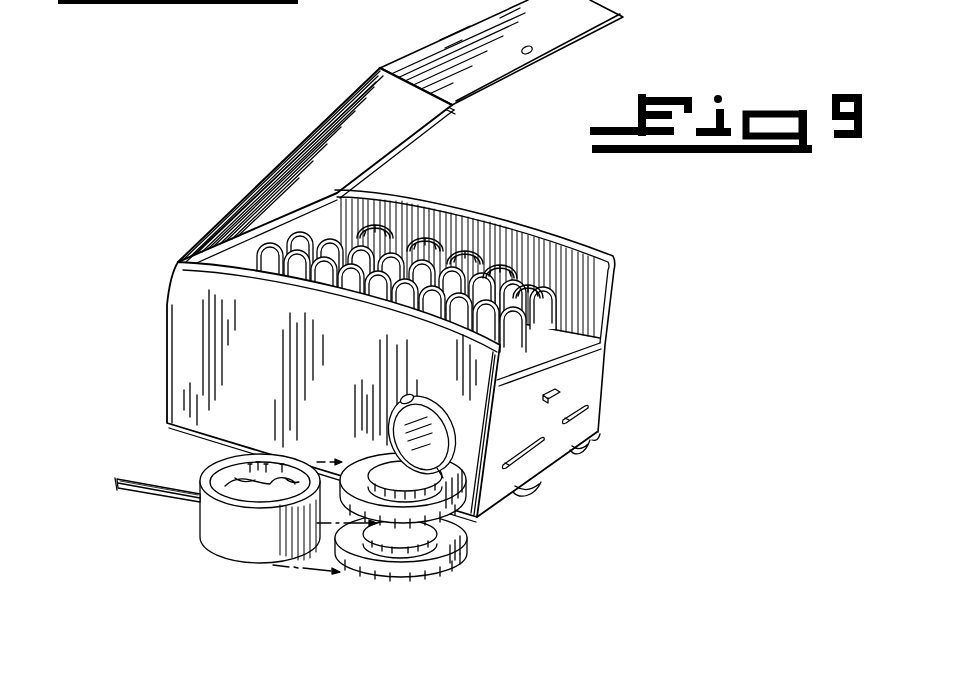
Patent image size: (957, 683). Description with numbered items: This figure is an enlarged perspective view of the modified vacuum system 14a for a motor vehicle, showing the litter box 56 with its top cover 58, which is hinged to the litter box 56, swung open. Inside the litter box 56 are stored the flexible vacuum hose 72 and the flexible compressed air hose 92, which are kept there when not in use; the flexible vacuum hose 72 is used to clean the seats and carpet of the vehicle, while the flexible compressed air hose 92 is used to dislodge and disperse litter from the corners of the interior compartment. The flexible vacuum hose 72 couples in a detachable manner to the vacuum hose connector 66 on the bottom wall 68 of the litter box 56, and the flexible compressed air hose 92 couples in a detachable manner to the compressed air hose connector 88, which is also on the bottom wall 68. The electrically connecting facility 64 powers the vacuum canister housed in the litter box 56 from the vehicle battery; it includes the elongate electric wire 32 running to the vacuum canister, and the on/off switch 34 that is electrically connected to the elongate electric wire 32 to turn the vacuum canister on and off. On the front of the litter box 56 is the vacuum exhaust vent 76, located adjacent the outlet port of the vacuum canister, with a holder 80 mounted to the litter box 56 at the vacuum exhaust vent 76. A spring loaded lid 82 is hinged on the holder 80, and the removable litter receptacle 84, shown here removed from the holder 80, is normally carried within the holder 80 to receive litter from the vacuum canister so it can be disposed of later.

The modified vacuum system 14a is at (349, 398).
The elongate electric wire 32 is at (126, 492).
The on/off switch 34 is at (556, 393).
The litter box 56 is at (162, 302).
The top cover 58 is at (320, 142).
The electrically connecting facility 64 is at (152, 479).
The vacuum hose connector 66 is at (532, 489).
The bottom wall 68 is at (593, 434).
The flexible vacuum hose 72 is at (312, 289).
The vacuum exhaust vent 76 is at (440, 496).
The holder 80 is at (362, 458).
The spring loaded lid 82 is at (438, 392).
The removable litter receptacle 84 is at (218, 521).
The compressed air hose connector 88 is at (583, 446).
The flexible compressed air hose 92 is at (413, 228).